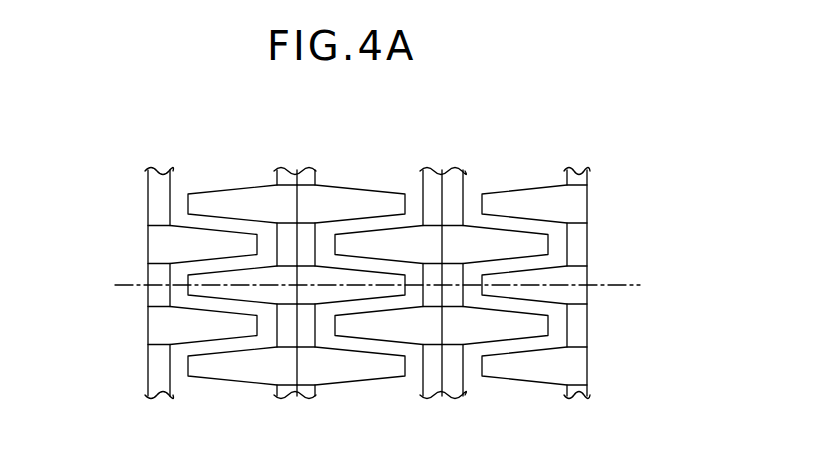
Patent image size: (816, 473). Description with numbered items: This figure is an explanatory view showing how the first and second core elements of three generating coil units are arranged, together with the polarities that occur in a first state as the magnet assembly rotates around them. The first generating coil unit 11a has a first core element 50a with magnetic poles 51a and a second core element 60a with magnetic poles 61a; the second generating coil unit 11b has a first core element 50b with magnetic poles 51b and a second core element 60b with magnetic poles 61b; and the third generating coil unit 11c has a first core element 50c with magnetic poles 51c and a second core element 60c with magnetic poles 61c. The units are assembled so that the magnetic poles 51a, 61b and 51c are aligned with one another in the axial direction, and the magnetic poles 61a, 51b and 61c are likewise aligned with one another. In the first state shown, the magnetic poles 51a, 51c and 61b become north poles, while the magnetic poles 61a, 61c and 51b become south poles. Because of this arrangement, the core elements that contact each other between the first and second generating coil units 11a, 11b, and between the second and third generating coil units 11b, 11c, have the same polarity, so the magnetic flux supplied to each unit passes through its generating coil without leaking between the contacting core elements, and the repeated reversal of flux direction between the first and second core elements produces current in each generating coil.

The first generating coil unit 11a is at (201, 170).
The second generating coil unit 11b is at (376, 167).
The third generating coil unit 11c is at (506, 170).
The first core element 50a is at (138, 369).
The first core element 50b is at (350, 398).
The first core element 50c is at (472, 392).
The second core element 60a is at (216, 392).
The second core element 60b is at (414, 387).
The second core element 60c is at (596, 344).
The magnetic poles 51a is at (188, 238).
The magnetic poles 51b is at (350, 203).
The magnetic poles 51c is at (533, 250).
The magnetic poles 61a is at (226, 203).
The magnetic poles 61b is at (370, 240).
The magnetic poles 61c is at (525, 203).